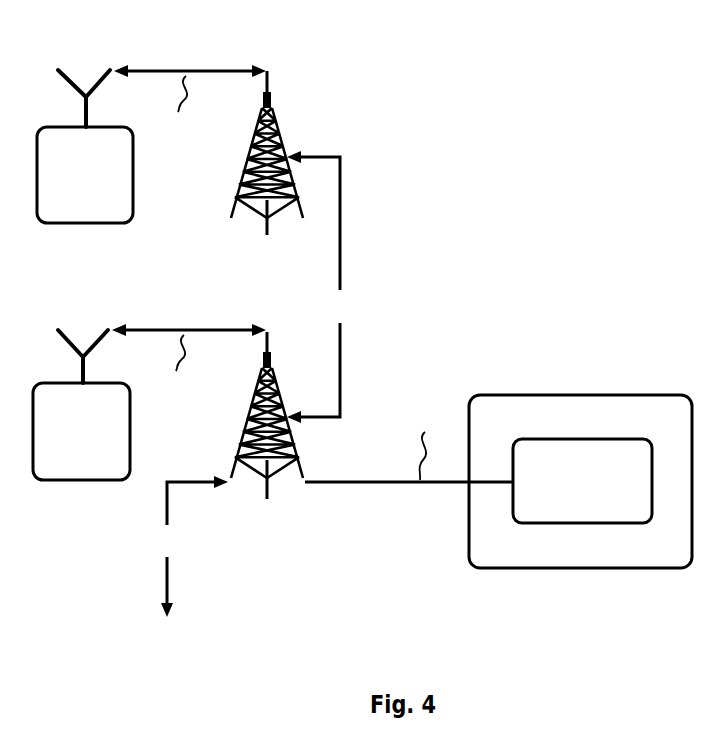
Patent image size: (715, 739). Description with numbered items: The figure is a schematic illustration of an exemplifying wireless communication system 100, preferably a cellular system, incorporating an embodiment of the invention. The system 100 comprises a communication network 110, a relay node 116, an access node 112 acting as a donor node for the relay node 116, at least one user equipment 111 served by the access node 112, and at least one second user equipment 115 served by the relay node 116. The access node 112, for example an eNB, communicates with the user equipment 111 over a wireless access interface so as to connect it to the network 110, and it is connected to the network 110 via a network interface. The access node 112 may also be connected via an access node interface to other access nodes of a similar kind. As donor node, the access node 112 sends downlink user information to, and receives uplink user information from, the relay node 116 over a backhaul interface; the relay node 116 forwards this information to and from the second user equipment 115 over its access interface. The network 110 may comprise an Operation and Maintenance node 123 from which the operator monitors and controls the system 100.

The wireless communication system 100 is at (572, 110).
The communication network 110 is at (611, 410).
The user equipment 111 is at (81, 405).
The access node 112 is at (267, 447).
The second user equipment 115 is at (85, 146).
The relay node 116 is at (267, 184).
The Operation and Maintenance node 123 is at (582, 481).